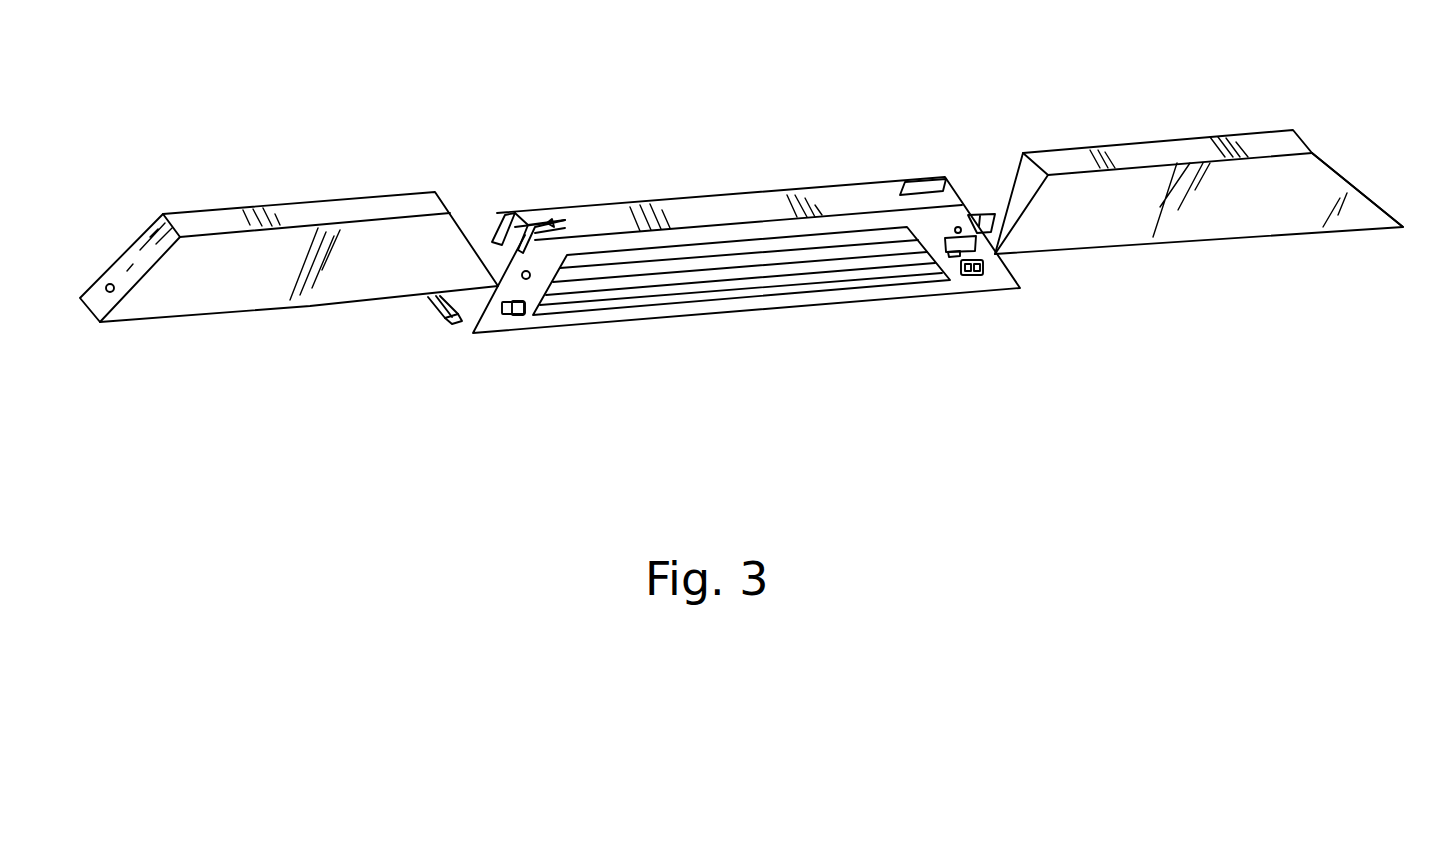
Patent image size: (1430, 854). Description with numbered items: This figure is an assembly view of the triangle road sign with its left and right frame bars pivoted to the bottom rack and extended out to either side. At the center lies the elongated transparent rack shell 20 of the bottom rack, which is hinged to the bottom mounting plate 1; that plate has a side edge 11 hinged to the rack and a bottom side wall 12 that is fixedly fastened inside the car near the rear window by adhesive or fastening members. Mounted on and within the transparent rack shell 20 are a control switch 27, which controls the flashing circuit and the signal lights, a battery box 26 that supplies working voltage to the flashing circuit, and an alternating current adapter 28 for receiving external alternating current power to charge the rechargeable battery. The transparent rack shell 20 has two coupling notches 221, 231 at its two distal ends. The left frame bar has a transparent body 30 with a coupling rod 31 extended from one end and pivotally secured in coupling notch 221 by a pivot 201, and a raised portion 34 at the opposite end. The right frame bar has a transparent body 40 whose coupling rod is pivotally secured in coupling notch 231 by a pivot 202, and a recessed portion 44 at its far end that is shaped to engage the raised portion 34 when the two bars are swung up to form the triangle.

The bottom mounting plate 1 is at (480, 221).
The side edge 11 is at (455, 322).
The bottom side wall 12 is at (428, 306).
The transparent rack shell 20 is at (747, 205).
The battery box 26 is at (945, 246).
The control switch 27 is at (515, 314).
The alternating current adapter 28 is at (974, 273).
The transparent body 30 is at (1133, 175).
The coupling rod 31 is at (981, 216).
The raised portion 34 is at (1394, 218).
The transparent body 40 is at (308, 212).
The recessed portion 44 is at (114, 292).
The pivot 201 is at (958, 226).
The pivot 202 is at (531, 272).
The coupling notch 221 is at (918, 191).
The coupling notch 231 is at (527, 220).